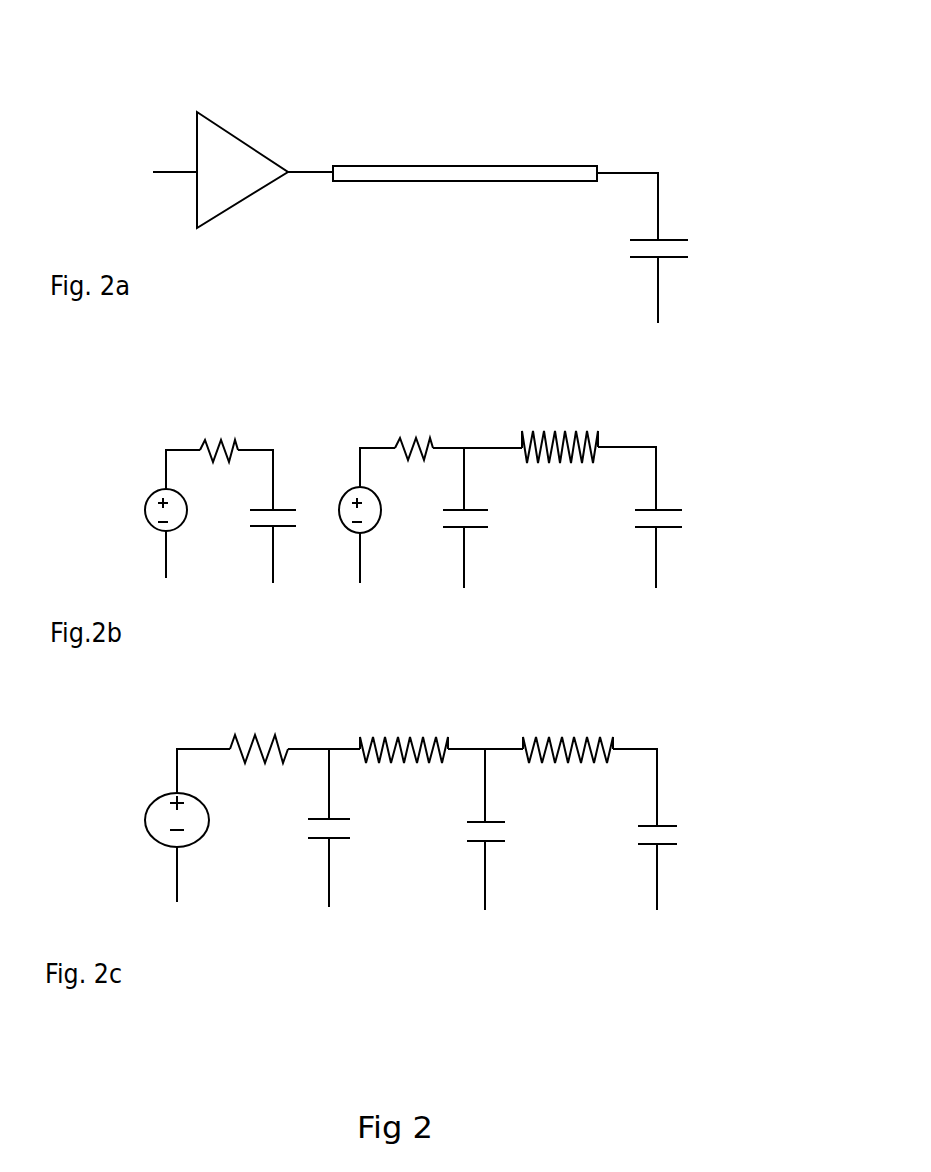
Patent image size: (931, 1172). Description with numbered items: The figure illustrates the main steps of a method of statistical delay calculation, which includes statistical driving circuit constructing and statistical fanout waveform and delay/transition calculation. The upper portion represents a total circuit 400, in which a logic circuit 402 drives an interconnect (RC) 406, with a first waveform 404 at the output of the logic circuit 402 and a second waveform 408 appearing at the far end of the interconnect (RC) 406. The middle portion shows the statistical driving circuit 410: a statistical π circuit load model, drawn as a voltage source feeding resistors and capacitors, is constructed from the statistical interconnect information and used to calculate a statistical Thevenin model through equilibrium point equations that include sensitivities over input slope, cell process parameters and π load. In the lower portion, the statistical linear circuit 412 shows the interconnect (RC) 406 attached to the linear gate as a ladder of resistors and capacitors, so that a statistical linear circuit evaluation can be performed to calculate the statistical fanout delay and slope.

In FIG. 2A, the total circuit 400 is at (458, 174).
In FIG. 2A, the logic circuit 402 is at (186, 104).
In FIG. 2A, the first waveform 404 is at (295, 154).
In FIG. 2A, the interconnect (RC) 406 is at (435, 198).
In FIG. 2A, the second waveform 408 is at (685, 93).
In FIG. 2B, the statistical driving circuit model 410 is at (798, 533).
In FIG. 2C, the statistical linear circuit for fanout evaluation 412 is at (795, 862).